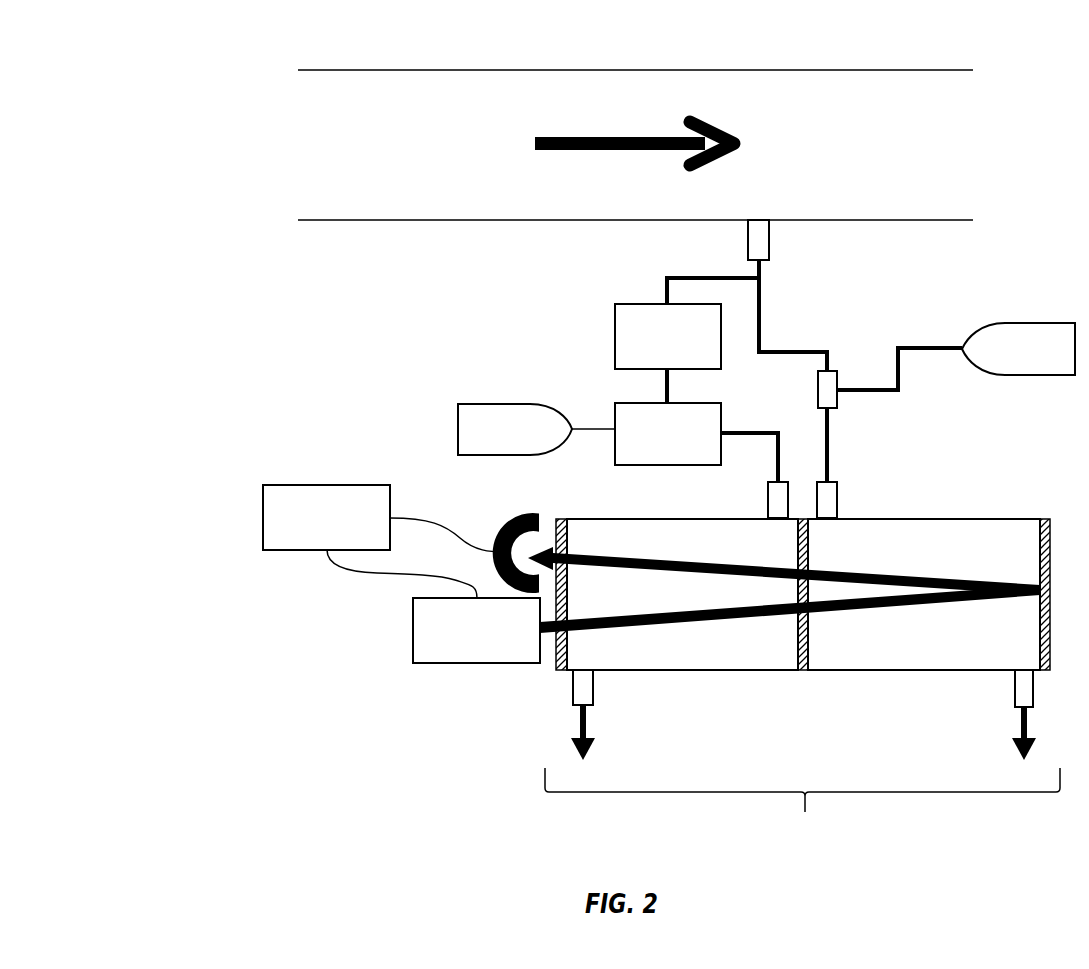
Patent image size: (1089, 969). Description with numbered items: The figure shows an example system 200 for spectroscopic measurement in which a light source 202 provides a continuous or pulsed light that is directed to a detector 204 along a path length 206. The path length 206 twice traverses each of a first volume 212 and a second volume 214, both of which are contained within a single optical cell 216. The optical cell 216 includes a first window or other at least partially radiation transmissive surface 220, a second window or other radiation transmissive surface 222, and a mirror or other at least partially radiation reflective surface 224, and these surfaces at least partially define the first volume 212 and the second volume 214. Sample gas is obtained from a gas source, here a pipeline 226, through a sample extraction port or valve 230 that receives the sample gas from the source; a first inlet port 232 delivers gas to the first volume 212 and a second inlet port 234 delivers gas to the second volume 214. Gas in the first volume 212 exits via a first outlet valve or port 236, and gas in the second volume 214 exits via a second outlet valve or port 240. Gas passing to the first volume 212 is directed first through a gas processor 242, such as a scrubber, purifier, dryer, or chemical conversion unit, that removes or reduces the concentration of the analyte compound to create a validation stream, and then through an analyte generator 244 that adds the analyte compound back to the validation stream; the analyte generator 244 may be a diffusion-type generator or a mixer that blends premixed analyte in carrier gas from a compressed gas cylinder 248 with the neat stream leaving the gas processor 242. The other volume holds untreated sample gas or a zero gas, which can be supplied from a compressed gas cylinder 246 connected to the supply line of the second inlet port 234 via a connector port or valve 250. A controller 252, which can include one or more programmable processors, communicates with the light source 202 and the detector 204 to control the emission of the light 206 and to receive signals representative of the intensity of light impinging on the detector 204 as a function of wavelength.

The system 200 is at (143, 90).
The light source 202 is at (495, 646).
The detector 204 is at (507, 527).
The path length 206 is at (866, 592).
The first volume 212 is at (780, 658).
The second volume 214 is at (1022, 658).
The optical cell 216 is at (802, 809).
The first window 220 is at (553, 663).
The second window 222 is at (803, 673).
The mirror 224 is at (1045, 517).
The pipeline 226 is at (945, 120).
The sample extraction port or valve 230 is at (772, 238).
The first inlet port 232 is at (767, 500).
The second inlet port 234 is at (840, 500).
The first outlet valve or port 236 is at (571, 688).
The second outlet valve or port 240 is at (1011, 689).
The gas processor 242 is at (687, 352).
The analyte generator 244 is at (687, 446).
The compressed gas cylinder 246 is at (1058, 364).
The compressed gas cylinder 248 is at (505, 442).
The connector port or valve 250 is at (836, 368).
The controller 252 is at (347, 532).